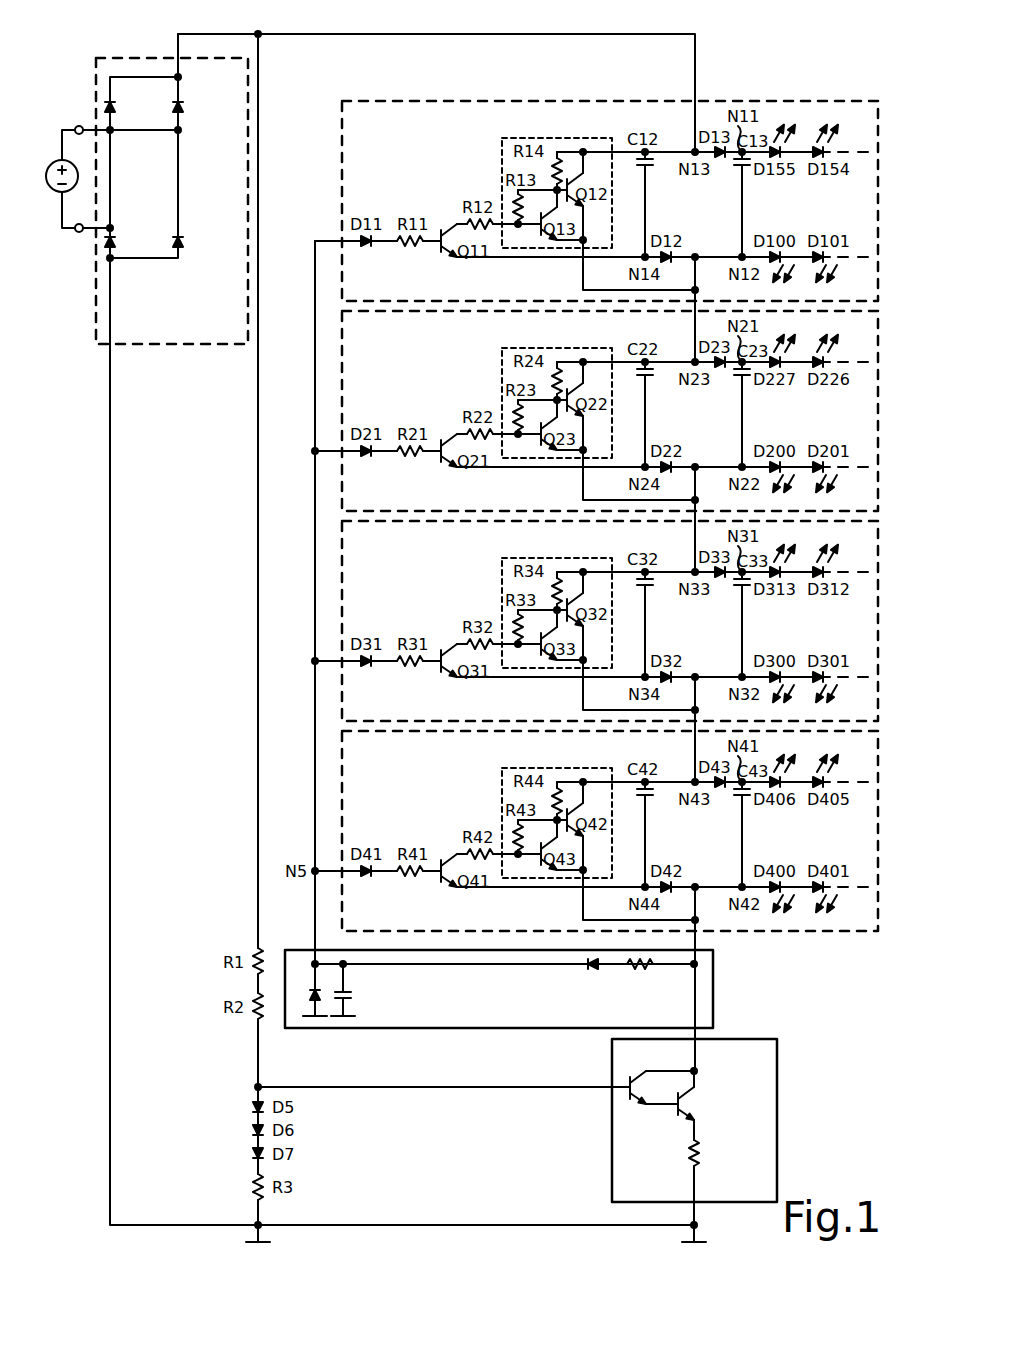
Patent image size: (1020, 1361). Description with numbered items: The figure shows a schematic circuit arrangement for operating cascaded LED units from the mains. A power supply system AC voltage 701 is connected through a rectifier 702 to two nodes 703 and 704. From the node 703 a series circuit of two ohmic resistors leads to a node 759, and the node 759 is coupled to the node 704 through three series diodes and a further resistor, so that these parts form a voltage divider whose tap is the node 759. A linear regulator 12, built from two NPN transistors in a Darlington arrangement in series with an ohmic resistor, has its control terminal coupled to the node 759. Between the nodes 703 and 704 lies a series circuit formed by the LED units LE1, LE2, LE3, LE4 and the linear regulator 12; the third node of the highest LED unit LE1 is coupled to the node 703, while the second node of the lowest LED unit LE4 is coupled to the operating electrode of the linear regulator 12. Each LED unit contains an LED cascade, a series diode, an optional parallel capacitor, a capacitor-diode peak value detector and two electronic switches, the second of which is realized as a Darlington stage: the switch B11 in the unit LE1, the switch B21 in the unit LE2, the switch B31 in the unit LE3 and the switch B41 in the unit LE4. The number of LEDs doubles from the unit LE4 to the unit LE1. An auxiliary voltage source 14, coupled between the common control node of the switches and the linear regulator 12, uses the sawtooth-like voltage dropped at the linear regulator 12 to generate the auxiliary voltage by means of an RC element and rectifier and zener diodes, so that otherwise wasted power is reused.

The power supply system AC voltage 701 is at (50, 181).
The rectifier 702 is at (197, 346).
The node 703 is at (255, 19).
The node 704 is at (118, 268).
The node 759 is at (260, 1086).
The auxiliary voltage source 14 is at (713, 992).
The linear regulator 12 is at (777, 1063).
The LED unit LE1 is at (382, 102).
The LED unit LE2 is at (382, 312).
The LED unit LE3 is at (382, 522).
The LED unit LE4 is at (382, 732).
The electronic switch B11 is at (501, 163).
The electronic switch B21 is at (501, 373).
The electronic switch B31 is at (501, 583).
The electronic switch B41 is at (501, 793).